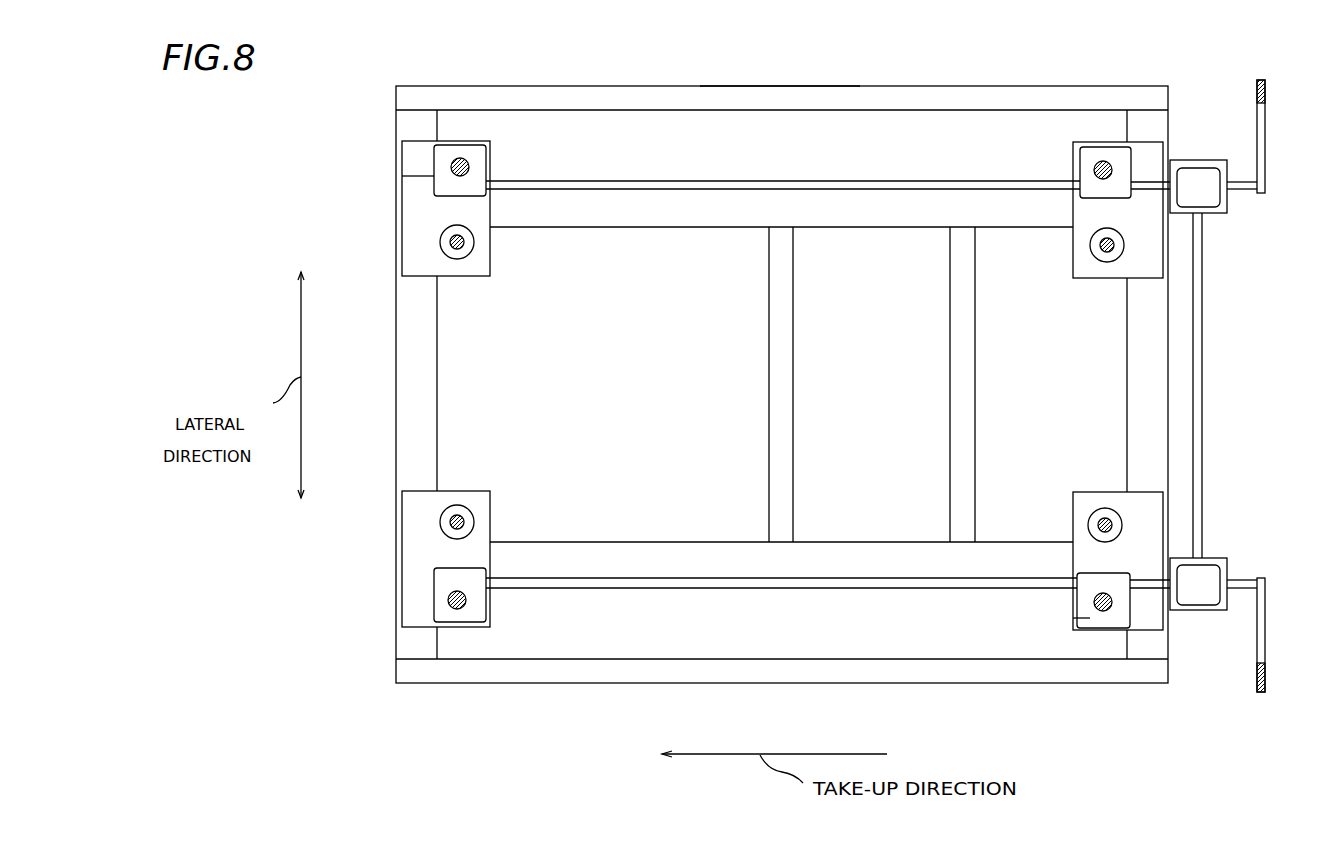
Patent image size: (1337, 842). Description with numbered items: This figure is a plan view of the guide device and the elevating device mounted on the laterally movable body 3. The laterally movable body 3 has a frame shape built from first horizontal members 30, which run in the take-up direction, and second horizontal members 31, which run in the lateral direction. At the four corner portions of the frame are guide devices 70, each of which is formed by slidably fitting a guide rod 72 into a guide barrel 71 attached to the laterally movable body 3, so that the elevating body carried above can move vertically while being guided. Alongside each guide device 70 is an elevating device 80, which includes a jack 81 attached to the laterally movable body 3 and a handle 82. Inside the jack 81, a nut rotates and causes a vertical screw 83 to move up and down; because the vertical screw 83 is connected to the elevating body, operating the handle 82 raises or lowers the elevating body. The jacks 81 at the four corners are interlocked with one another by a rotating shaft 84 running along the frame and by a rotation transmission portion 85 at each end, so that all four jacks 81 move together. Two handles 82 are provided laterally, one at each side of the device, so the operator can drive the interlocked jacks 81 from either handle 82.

The laterally movable body 3 is at (847, 87).
The first horizontal members 30 is at (718, 93).
The second horizontal members 31 is at (408, 357).
The guide device 70 is at (477, 260).
The guide barrel 71 is at (470, 242).
The guide rod 72 is at (460, 257).
The elevating device 80 is at (487, 158).
The jack 81 is at (440, 176).
The handle 82 is at (1262, 97).
The vertical screw 83 is at (465, 163).
The rotating shaft 84 is at (870, 183).
The rotation transmission portion 85 is at (1200, 177).